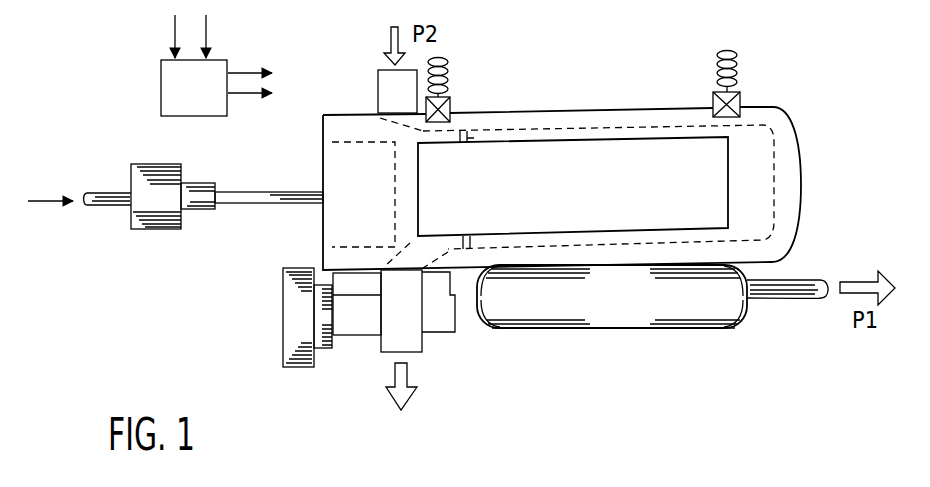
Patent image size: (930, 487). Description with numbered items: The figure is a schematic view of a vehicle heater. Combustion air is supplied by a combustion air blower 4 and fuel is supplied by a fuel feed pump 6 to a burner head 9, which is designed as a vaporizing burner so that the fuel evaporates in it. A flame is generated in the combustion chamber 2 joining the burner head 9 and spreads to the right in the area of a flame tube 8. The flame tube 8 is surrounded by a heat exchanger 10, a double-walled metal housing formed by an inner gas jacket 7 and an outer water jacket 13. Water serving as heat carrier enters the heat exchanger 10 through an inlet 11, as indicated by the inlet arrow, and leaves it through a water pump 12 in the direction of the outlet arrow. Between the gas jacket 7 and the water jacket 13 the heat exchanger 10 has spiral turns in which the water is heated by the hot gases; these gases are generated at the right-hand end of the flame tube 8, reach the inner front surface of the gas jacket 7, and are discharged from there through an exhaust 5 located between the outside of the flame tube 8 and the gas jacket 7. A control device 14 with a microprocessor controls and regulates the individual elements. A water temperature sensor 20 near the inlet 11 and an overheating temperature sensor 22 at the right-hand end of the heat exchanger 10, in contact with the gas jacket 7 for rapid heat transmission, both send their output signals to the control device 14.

The combustion chamber 2 is at (452, 202).
The combustion air blower 4 is at (296, 323).
The exhaust 5 is at (410, 343).
The fuel feed pump 6 is at (158, 212).
The gas jacket 7 is at (782, 133).
The flame tube 8 is at (573, 157).
The burner head 9 is at (366, 202).
The heat exchanger 10 is at (788, 180).
The inlet 11 is at (390, 93).
The water pump 12 is at (643, 303).
The water jacket 13 is at (797, 237).
The control device 14 is at (207, 102).
The water temperature sensor 20 is at (443, 108).
The overheating temperature sensor 22 is at (742, 102).